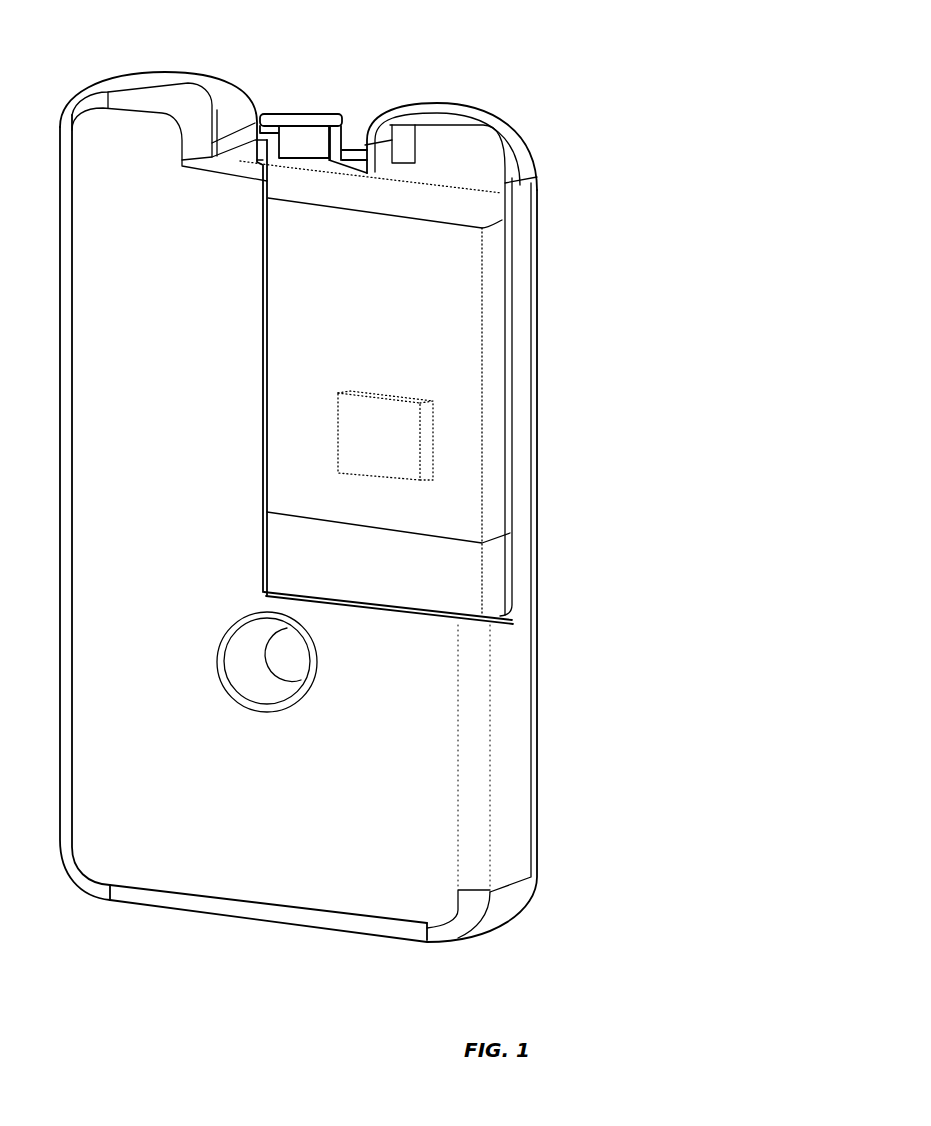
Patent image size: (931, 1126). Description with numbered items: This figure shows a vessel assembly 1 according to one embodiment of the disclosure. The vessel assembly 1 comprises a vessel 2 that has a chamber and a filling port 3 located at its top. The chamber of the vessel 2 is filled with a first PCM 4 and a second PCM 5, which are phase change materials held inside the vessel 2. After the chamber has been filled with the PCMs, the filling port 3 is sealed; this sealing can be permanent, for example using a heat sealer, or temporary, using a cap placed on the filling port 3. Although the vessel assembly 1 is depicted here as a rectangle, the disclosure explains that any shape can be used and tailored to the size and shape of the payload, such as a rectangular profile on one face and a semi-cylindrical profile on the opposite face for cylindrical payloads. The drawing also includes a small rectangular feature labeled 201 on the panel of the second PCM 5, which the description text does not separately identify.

The vessel assembly 1 is at (604, 755).
The vessel 2 is at (537, 650).
The filling port 3 is at (320, 118).
The first PCM 4 is at (448, 580).
The second PCM 5 is at (423, 358).
The button 201 is at (442, 477).